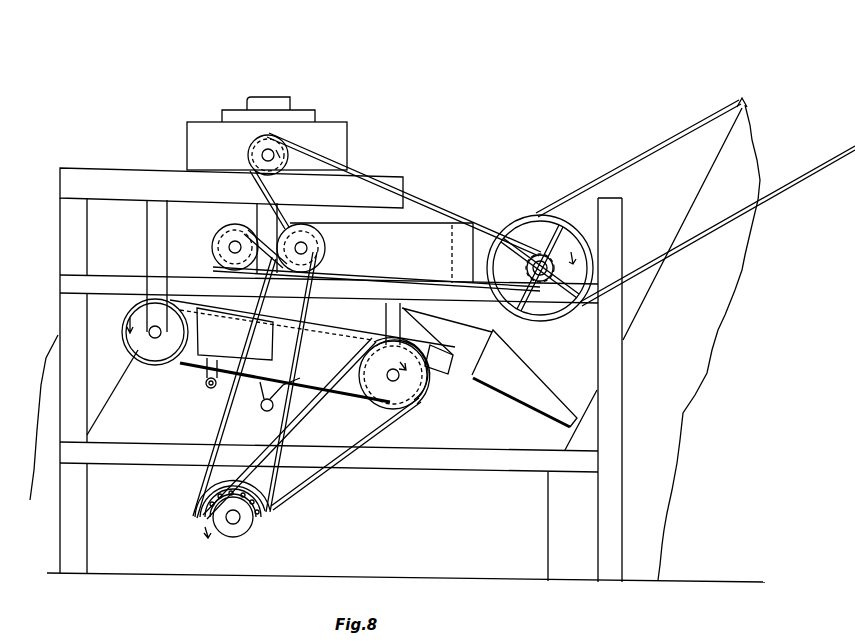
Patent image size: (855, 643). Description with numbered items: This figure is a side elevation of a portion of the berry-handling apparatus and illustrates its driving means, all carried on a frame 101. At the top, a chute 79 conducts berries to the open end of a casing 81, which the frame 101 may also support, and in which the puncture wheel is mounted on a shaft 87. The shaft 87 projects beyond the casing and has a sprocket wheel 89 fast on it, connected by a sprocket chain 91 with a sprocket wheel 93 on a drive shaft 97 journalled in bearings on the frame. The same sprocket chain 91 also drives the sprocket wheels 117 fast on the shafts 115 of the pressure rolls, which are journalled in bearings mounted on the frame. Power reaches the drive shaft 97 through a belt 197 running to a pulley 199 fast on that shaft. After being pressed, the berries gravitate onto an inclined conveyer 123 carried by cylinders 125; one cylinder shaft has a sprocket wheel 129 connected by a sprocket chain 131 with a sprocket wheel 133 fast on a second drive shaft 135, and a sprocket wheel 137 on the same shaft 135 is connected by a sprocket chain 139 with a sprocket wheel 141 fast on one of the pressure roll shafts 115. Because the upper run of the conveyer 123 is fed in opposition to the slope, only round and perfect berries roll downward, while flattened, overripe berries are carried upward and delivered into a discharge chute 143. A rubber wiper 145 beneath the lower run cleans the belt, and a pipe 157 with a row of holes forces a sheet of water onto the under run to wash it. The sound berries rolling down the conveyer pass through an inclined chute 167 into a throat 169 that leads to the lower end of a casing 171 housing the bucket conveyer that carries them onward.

The chute 79 is at (283, 99).
The casing 81 is at (338, 130).
The shaft 87 is at (262, 157).
The sprocket wheel 89 is at (287, 152).
The sprocket chain 91 is at (412, 194).
The sprocket wheel 93 is at (532, 247).
The drive shaft 97 is at (560, 224).
The frame 101 is at (133, 176).
The shafts 115 is at (232, 245).
The sprocket wheels 117 is at (213, 253).
The conveyer 123 is at (179, 366).
The cylinders 125 is at (140, 343).
The sprocket wheel 129 is at (411, 388).
The sprocket chain 131 is at (392, 428).
The sprocket wheel 133 is at (242, 517).
The drive shaft 135 is at (260, 533).
The sprocket wheel 137 is at (206, 503).
The sprocket chain 139 is at (229, 398).
The sprocket wheel 141 is at (315, 233).
The discharge chute 143 is at (97, 408).
The wiper 145 is at (257, 402).
The pipe 157 is at (204, 383).
The chute 167 is at (434, 332).
The throat 169 is at (527, 361).
The casing 171 is at (706, 333).
The belt 197 is at (695, 274).
The pulley 199 is at (538, 220).